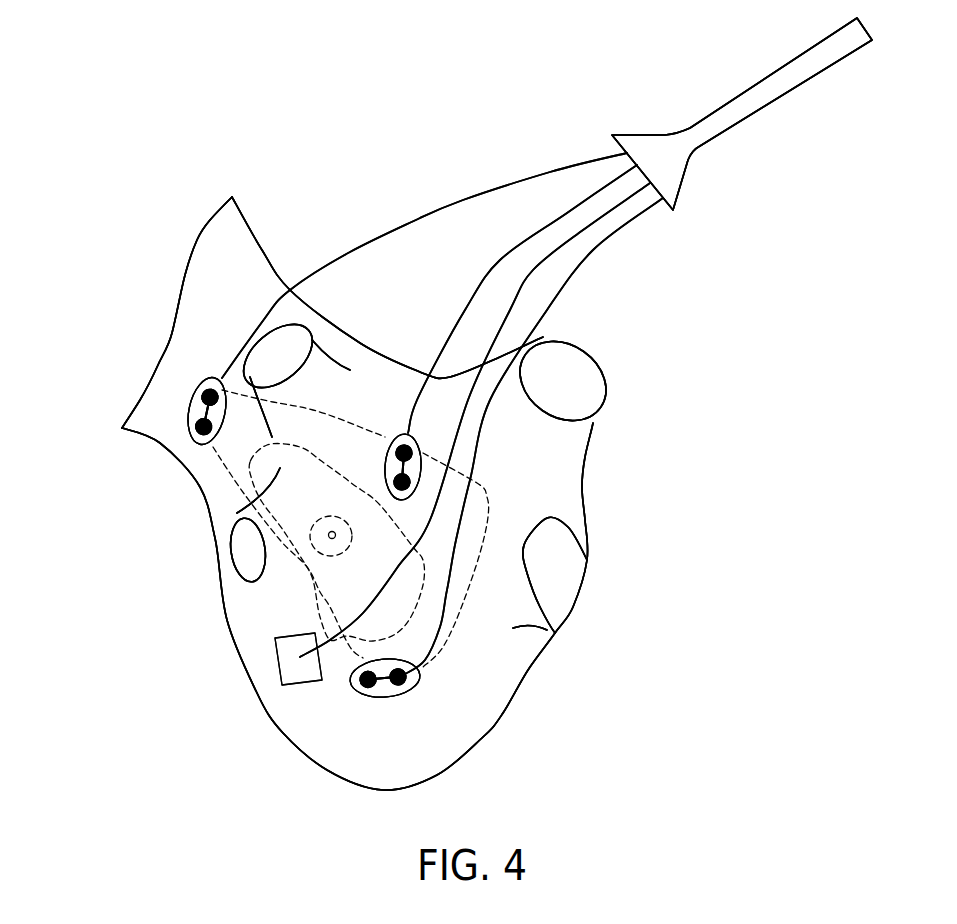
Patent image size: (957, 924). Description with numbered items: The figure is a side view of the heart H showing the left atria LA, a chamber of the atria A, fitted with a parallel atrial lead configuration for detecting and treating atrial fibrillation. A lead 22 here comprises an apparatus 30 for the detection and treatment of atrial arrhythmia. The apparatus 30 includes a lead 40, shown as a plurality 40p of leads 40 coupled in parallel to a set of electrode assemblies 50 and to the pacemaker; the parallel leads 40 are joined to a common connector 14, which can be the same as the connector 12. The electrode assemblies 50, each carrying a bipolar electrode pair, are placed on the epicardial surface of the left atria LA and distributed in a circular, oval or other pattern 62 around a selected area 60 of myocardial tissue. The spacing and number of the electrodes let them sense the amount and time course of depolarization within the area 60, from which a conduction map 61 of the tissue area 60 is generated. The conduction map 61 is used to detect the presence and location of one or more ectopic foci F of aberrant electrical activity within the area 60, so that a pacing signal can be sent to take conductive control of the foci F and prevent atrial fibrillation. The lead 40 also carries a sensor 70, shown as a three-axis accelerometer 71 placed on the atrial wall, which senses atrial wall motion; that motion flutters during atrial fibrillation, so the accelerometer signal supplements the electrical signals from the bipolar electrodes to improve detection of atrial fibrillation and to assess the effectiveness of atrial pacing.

The connector 12 is at (680, 167).
The common connector 14 is at (680, 167).
The apparatus 30 is at (548, 150).
The lead 22 is at (522, 240).
The lead 40 is at (573, 272).
The plurality of leads 40p is at (573, 272).
The distributed pattern 62 is at (317, 795).
The electrode assembly 50 is at (190, 432).
The area 60 is at (225, 473).
The conduction map 61 is at (333, 602).
The sensor 70 is at (277, 663).
The accelerometer 71 is at (277, 663).
The foci F is at (330, 533).
The heart H is at (630, 589).
The left atria LA is at (472, 688).
The atria A is at (472, 688).